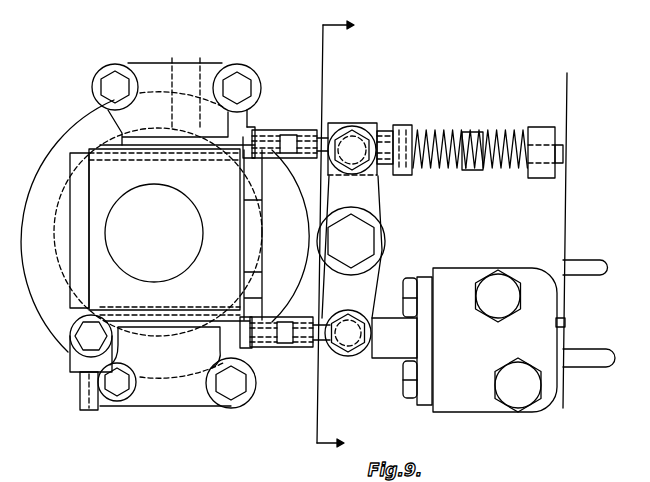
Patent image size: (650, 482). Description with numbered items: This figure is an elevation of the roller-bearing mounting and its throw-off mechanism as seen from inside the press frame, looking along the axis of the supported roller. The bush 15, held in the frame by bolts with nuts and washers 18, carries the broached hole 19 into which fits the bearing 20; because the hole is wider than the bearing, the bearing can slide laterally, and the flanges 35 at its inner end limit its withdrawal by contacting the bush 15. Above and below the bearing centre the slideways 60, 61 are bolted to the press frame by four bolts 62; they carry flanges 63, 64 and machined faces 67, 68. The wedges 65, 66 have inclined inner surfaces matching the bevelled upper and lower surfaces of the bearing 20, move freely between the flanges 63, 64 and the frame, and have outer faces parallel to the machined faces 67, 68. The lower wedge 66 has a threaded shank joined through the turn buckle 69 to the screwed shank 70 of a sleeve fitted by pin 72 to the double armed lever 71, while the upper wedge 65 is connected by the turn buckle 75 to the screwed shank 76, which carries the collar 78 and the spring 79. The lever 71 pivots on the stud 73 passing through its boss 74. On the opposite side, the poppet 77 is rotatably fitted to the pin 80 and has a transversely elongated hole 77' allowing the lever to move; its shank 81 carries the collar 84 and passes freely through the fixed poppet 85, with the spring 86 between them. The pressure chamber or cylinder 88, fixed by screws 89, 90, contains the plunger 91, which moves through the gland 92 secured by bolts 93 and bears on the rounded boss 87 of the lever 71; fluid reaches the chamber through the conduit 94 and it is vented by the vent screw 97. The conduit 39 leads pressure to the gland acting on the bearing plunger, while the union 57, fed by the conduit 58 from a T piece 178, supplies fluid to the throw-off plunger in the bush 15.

The bush 15 is at (68, 127).
The flanges 35 is at (90, 152).
The broached hole 19 is at (78, 183).
The bearing 20 is at (97, 197).
The slideway 60 is at (153, 83).
The slideway 61 is at (155, 387).
The bolts 62 is at (113, 80).
The flange 63 is at (200, 82).
The machined face 67 is at (175, 80).
The flange 64 is at (160, 333).
The machined face 68 is at (178, 347).
The wedge 65 is at (242, 132).
The wedge 66 is at (233, 335).
The turn buckle 75 is at (302, 132).
The turn buckle 69 is at (297, 345).
The screwed shank 76 is at (320, 127).
The nuts and washers 18 is at (333, 236).
The screwed shank 70 is at (340, 123).
The pin 80 is at (347, 127).
The poppet 77 is at (385, 116).
The transversely elongated hole 77' is at (406, 104).
The spring 79 is at (410, 123).
The collar 84 is at (453, 128).
The spring 86 is at (467, 133).
The collar 78 is at (482, 132).
The poppet 85 is at (543, 138).
The shank 81 is at (555, 150).
The double armed lever 71 is at (368, 200).
The stud 73 is at (360, 237).
The boss 74 is at (380, 242).
The pin 72 is at (347, 357).
The rounded boss 87 is at (357, 352).
The plunger 91 is at (382, 323).
The bolts 93 is at (407, 283).
The gland 92 is at (430, 405).
The pressure chamber or cylinder 88 is at (535, 290).
The screw 89 is at (498, 297).
The screw 90 is at (520, 387).
The conduit 39 is at (580, 268).
The vent screw 97 is at (565, 322).
The conduit 94 is at (573, 357).
The union 57 is at (88, 336).
The T piece 178 is at (80, 358).
The conduit 58 is at (88, 397).